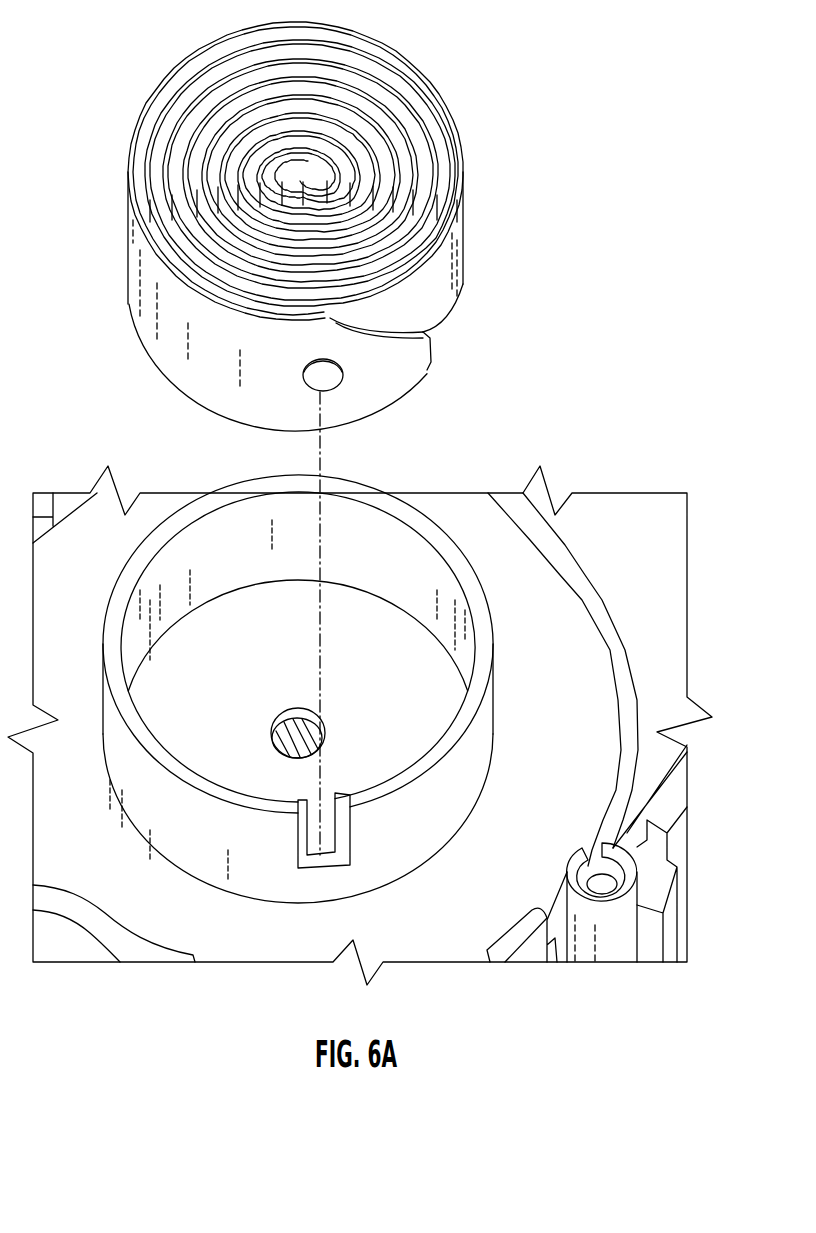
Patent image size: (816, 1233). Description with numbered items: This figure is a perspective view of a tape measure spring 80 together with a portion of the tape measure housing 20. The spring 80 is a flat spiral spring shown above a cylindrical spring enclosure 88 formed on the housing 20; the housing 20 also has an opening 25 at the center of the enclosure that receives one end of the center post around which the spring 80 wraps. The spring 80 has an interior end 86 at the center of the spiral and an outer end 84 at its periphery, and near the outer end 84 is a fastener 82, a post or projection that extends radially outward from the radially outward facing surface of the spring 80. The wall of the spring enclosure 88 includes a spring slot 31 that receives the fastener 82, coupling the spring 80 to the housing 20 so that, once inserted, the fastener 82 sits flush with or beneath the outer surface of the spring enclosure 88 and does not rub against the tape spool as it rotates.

The spring 80 is at (190, 58).
The interior end 86 is at (307, 167).
The outer end 84 is at (431, 355).
The fastener 82 is at (333, 391).
The spring enclosure 88 is at (120, 577).
The opening 25 is at (288, 710).
The housing 20 is at (578, 680).
The spring slot 31 is at (303, 835).